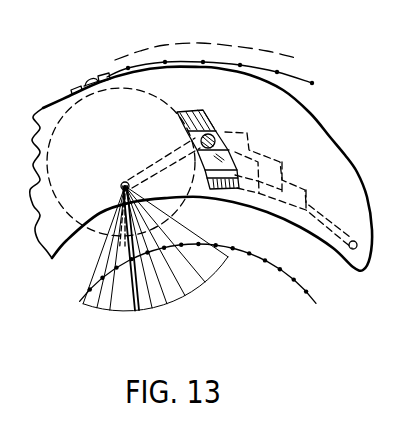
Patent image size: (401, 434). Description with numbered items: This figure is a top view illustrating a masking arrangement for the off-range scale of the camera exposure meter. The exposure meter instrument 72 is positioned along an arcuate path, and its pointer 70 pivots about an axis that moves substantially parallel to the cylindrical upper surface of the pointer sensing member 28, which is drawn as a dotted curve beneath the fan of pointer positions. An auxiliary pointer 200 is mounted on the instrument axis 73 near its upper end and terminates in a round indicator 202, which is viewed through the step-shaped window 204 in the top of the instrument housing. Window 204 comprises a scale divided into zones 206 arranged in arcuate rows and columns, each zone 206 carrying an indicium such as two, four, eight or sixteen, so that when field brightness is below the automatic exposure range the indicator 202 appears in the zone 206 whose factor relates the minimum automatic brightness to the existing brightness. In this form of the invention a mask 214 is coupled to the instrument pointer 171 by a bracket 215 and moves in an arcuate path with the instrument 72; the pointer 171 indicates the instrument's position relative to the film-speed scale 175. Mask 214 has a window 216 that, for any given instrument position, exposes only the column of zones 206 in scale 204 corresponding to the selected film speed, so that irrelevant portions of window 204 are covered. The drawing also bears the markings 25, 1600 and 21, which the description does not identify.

The mask 214 is at (43, 108).
The exposure meter instrument 72 is at (40, 140).
The bracket 215 is at (76, 88).
The pointer 171 is at (92, 78).
The film-speed scale 175 is at (80, 50).
The tube 25 is at (194, 67).
The outer arc 1600 is at (226, 58).
The pointer sensing member 28 is at (272, 273).
The pointer 70 is at (140, 304).
The instrument axis 73 is at (118, 184).
The auxiliary pointer 200 is at (145, 178).
The window 204 is at (224, 101).
The window 216 is at (178, 116).
The zones 206 is at (194, 139).
The round indicator 202 is at (222, 130).
The body 21 is at (394, 89).